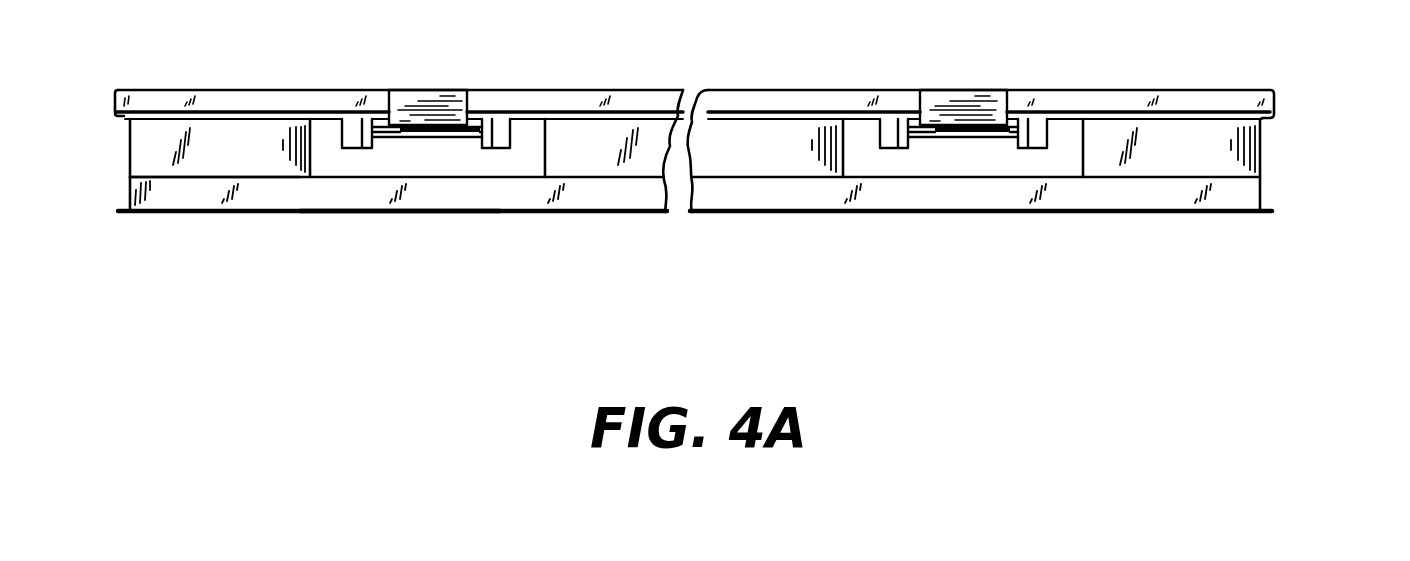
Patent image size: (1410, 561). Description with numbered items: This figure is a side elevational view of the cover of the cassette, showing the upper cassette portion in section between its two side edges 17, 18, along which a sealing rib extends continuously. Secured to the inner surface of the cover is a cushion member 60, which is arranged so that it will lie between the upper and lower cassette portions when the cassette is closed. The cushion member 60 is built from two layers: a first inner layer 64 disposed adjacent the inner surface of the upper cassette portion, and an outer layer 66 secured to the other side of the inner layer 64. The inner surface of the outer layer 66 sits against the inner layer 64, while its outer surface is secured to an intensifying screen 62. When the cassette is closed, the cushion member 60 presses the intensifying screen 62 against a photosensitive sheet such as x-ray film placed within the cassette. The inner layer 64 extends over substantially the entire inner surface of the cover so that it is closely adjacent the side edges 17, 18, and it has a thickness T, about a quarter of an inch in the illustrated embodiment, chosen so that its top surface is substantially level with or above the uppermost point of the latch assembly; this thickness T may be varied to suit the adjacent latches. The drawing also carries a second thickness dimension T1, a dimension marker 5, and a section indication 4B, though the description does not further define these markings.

The side edge 17 is at (115, 100).
The side edge 18 is at (1275, 101).
The intermediate layer thickness / spacer layer 5 is at (60, 165).
The cushion member 60 is at (130, 177).
The intensifying screen 62 is at (273, 213).
The first inner layer 64 is at (695, 148).
The outer layer 66 is at (455, 193).
The section line 4B- 4B is at (327, 50).
The thickness T is at (1367, 32).
The thickness dimension T1 is at (1280, 208).